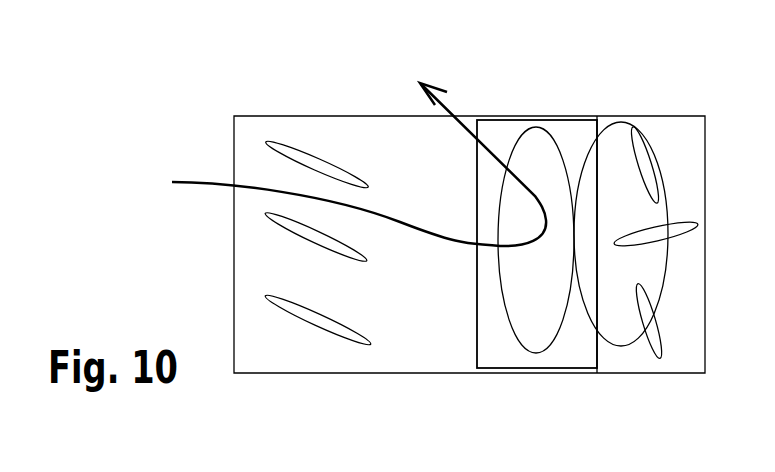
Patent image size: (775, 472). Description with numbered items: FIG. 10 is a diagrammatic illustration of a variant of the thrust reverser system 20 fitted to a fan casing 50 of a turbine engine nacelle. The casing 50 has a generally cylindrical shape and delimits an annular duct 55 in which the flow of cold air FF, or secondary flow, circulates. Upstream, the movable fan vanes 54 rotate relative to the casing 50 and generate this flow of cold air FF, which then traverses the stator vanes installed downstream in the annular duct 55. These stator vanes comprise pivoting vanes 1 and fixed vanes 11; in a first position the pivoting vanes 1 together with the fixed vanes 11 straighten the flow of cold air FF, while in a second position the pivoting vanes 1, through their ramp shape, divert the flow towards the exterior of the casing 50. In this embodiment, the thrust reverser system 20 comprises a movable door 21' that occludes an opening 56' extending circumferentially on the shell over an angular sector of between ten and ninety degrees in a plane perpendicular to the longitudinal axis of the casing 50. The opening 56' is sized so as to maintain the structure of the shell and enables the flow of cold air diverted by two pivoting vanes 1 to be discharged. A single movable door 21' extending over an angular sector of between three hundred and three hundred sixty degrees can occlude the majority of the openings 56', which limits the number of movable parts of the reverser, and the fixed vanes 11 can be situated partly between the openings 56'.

The thrust reverser system 20 is at (718, 108).
The fan casing 50 is at (322, 374).
The fan vanes 54 is at (319, 153).
The annular duct 55 is at (265, 283).
The opening 56' is at (541, 282).
The movable door 21' is at (621, 201).
The pivoting stator vanes 1 is at (645, 162).
The fixed vanes 11 is at (678, 230).
The flow of cold air FF is at (200, 181).